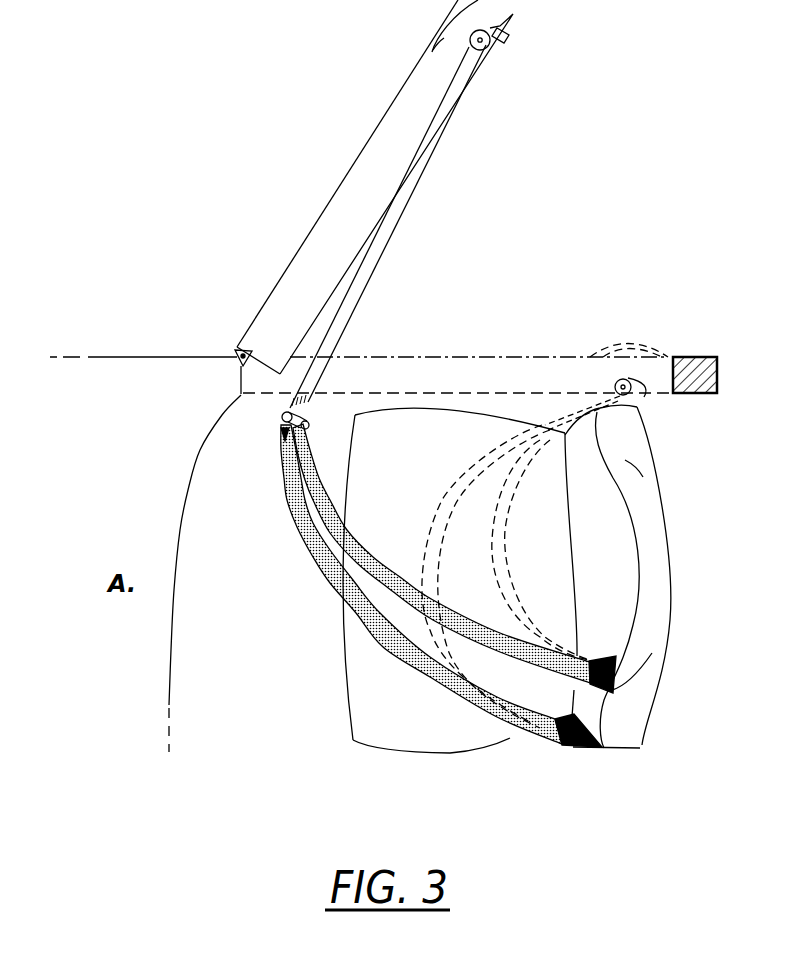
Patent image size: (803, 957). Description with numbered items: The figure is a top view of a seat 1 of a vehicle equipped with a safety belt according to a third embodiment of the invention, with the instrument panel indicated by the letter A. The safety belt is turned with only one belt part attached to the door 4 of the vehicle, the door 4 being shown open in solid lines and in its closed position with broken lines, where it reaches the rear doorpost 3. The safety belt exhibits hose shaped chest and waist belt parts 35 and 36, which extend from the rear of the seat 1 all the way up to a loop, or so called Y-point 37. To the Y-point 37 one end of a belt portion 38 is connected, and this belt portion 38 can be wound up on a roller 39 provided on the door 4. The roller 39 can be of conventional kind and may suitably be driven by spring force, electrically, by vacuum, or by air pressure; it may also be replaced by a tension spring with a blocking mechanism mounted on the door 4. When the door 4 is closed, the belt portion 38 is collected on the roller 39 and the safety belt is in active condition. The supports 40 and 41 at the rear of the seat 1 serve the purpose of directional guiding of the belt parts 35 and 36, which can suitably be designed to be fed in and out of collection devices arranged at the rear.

The seat 1 is at (557, 535).
The rear doorpost 3 is at (688, 357).
The door 4 is at (355, 192).
The belt part 35 is at (332, 532).
The belt part 36 is at (435, 587).
The Y-point 37 is at (283, 421).
The belt portion 38 is at (370, 262).
The roller 39 is at (487, 50).
The support 40 is at (623, 667).
The support 41 is at (570, 748).